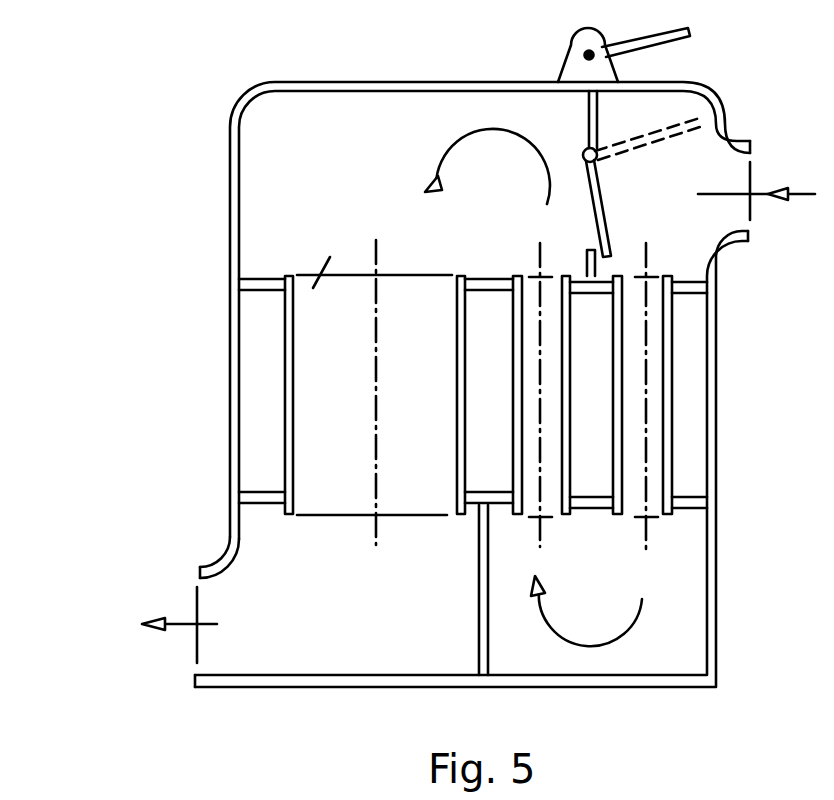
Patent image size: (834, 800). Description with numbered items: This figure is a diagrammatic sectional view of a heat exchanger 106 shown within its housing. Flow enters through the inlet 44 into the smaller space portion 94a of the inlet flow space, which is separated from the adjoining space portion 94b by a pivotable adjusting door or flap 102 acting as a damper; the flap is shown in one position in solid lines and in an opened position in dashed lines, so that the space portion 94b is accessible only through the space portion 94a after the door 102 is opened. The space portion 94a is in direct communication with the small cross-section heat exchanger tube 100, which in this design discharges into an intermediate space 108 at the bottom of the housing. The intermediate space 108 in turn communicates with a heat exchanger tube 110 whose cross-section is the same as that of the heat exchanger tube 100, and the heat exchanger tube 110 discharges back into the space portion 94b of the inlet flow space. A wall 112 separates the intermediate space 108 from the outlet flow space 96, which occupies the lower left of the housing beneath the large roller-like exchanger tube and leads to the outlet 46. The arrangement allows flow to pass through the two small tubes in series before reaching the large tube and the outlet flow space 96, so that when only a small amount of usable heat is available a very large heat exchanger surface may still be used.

The heat exchanger 106 is at (224, 125).
The space portion 94b is at (382, 173).
The space portion 94a is at (690, 175).
The inlet 44 is at (746, 178).
The adjusting door or flap 102 is at (601, 208).
The heat exchanger tube 110 is at (553, 367).
The small cross-section heat exchanger tube 100 is at (655, 428).
The outlet flow space 96 is at (376, 595).
The intermediate space 108 is at (610, 593).
The wall 112 is at (479, 645).
The outlet 46 is at (204, 654).